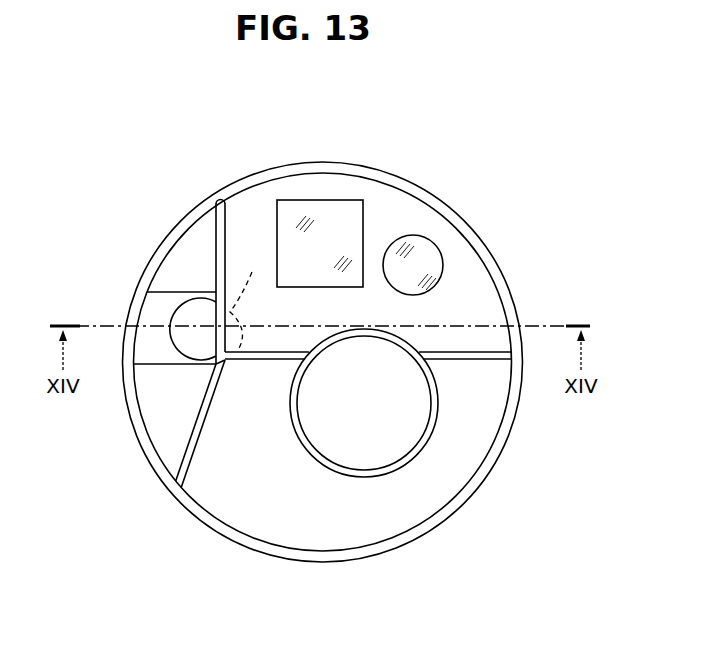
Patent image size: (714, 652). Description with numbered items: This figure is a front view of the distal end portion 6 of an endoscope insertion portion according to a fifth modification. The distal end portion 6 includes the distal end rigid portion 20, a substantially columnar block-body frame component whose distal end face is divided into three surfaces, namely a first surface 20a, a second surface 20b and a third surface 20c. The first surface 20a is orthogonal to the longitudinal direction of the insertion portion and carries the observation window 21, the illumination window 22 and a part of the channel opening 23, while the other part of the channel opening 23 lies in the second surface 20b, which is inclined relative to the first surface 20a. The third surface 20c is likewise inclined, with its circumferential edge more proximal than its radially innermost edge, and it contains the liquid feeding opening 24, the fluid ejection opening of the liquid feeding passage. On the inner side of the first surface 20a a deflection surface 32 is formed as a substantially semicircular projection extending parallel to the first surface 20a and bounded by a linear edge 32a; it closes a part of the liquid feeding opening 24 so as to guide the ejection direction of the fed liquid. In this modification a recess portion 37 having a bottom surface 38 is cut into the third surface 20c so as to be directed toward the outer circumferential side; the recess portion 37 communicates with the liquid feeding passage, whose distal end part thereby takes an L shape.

The distal end portion 6 is at (296, 140).
The distal end rigid portion 20 is at (422, 184).
The first surface 20a is at (243, 212).
The second surface 20b is at (253, 510).
The third surface 20c is at (198, 243).
The observation window 21 is at (322, 212).
The illumination window 22 is at (428, 257).
The channel opening 23 is at (360, 452).
The liquid feeding opening 24 is at (188, 350).
The deflection surface 32 is at (248, 295).
The linear edge 32a is at (213, 306).
The recess portion 37 is at (148, 294).
The bottom surface 38 is at (150, 318).